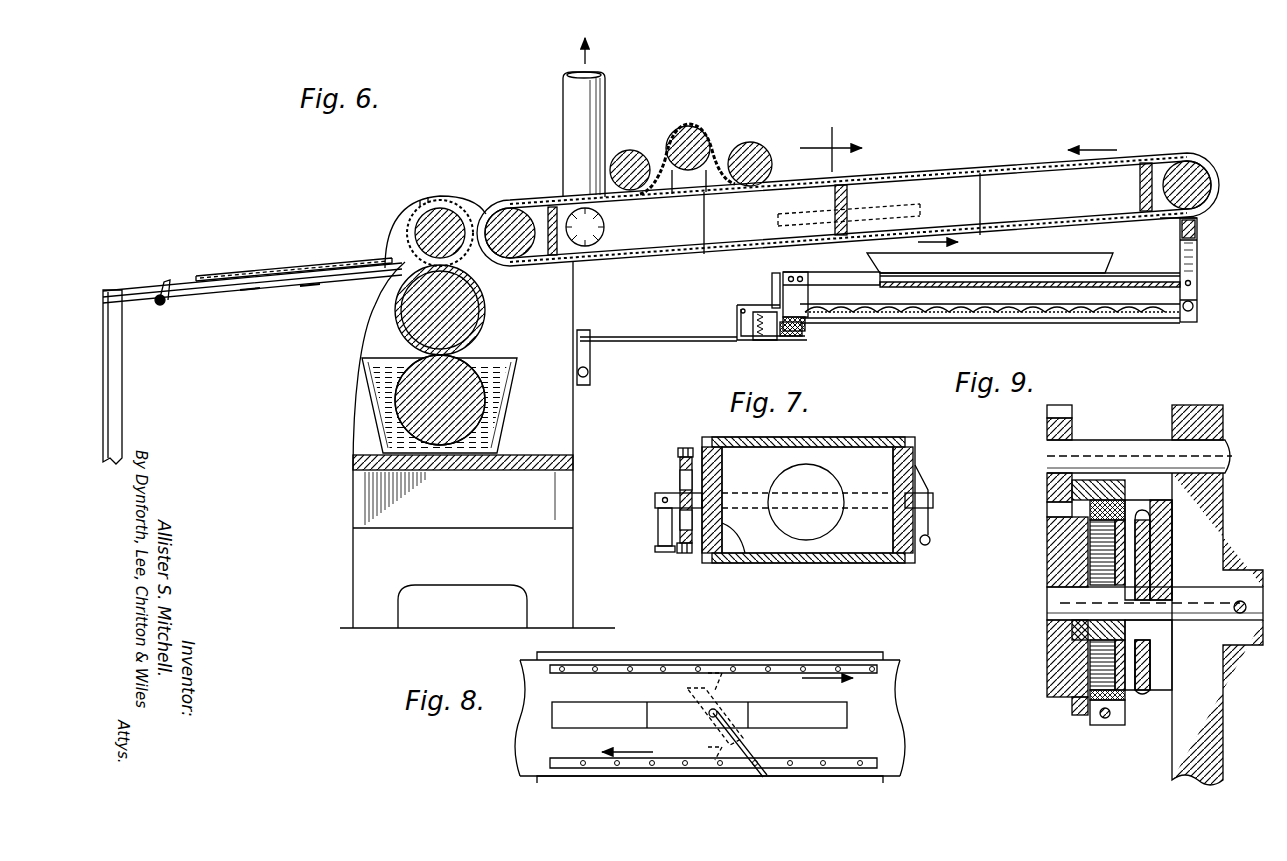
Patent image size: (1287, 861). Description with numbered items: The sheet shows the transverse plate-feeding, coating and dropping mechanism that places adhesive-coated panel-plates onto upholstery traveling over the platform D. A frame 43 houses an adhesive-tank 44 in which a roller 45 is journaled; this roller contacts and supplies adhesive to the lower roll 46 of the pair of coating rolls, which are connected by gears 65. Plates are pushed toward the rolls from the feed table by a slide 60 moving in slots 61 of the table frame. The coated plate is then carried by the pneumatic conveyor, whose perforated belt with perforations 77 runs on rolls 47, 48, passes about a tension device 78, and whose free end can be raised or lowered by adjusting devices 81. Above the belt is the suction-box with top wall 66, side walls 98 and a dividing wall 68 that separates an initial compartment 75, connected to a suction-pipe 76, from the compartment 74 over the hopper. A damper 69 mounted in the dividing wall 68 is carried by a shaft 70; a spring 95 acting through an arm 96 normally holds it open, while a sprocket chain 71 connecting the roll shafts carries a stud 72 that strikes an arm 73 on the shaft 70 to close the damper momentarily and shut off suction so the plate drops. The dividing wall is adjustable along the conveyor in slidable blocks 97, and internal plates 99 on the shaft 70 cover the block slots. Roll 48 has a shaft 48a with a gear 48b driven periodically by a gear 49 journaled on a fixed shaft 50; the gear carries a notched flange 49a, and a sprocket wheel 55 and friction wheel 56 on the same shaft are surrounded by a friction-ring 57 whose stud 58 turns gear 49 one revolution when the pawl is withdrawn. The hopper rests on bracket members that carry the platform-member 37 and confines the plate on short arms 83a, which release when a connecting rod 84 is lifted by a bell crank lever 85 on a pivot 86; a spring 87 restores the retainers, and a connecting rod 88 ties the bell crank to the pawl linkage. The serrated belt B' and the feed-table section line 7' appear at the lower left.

In FIG. 6, the slide member 7' is at (208, 242).
In FIG. 6, the serrated conveyor belt B' is at (990, 330).
In FIG. 6, the platform D is at (1100, 322).
In FIG. 6, the platform-member 37 is at (1030, 320).
In FIG. 6, the frame 43 is at (360, 424).
In FIG. 9, the frame 43 is at (1195, 732).
In FIG. 6, the adhesive-tank 44 is at (515, 410).
In FIG. 6, the roller 45 is at (460, 360).
In FIG. 6, the lower roll 46 is at (487, 305).
In FIG. 6, the roll 47 is at (1195, 160).
In FIG. 6, the roll 48 is at (520, 206).
In FIG. 9, the shaft 48a is at (1088, 452).
In FIG. 9, the gear 48b is at (1047, 433).
In FIG. 9, the gear 49 is at (1050, 568).
In FIG. 9, the flange 49a is at (1083, 722).
In FIG. 9, the fixed shaft 50 is at (1060, 608).
In FIG. 9, the sprocket wheel 55 is at (1145, 545).
In FIG. 9, the friction wheel 56 is at (1120, 505).
In FIG. 9, the friction-ring 57 is at (1190, 462).
In FIG. 9, the stud 58 is at (1110, 498).
In FIG. 6, the slide 60 is at (162, 306).
In FIG. 6, the slots 61 is at (250, 300).
In FIG. 6, the gears 65 is at (452, 200).
In FIG. 6, the top wall 66 is at (1015, 175).
In FIG. 6, the dividing wall 68 is at (860, 228).
In FIG. 7, the dividing wall 68 is at (808, 500).
In FIG. 6, the damper 69 is at (790, 225).
In FIG. 7, the damper 69 is at (812, 485).
In FIG. 8, the damper 69 is at (685, 690).
In FIG. 7, the shaft 70 is at (933, 500).
In FIG. 8, the shaft 70 is at (717, 710).
In FIG. 7, the sprocket chain 71 is at (678, 452).
In FIG. 8, the sprocket chain 71 is at (690, 668).
In FIG. 7, the stud 72 is at (672, 553).
In FIG. 8, the stud 72 is at (765, 778).
In FIG. 7, the arm 73 is at (658, 528).
In FIG. 8, the arm 73 is at (745, 750).
In FIG. 6, the compartment 74 is at (848, 209).
In FIG. 7, the compartment 74 is at (830, 563).
In FIG. 6, the initial compartment 75 is at (669, 218).
In FIG. 6, the suction-pipe 76 is at (608, 100).
In FIG. 6, the perforations 77 is at (938, 222).
In FIG. 6, the tension device 78 is at (742, 142).
In FIG. 6, the adjusting devices 81 is at (1197, 250).
In FIG. 6, the arms 83a is at (930, 280).
In FIG. 6, the connecting rod 84 is at (772, 290).
In FIG. 6, the bell crank lever 85 is at (737, 318).
In FIG. 6, the pivot 86 is at (740, 306).
In FIG. 6, the spring 87 is at (790, 338).
In FIG. 6, the connecting rod 88 is at (640, 345).
In FIG. 7, the spring 95 is at (930, 542).
In FIG. 7, the arm 96 is at (930, 520).
In FIG. 7, the slidable blocks 97 is at (725, 465).
In FIG. 8, the slidable blocks 97 is at (660, 712).
In FIG. 7, the side walls 98 is at (700, 447).
In FIG. 7, the internal plates 99 is at (745, 553).